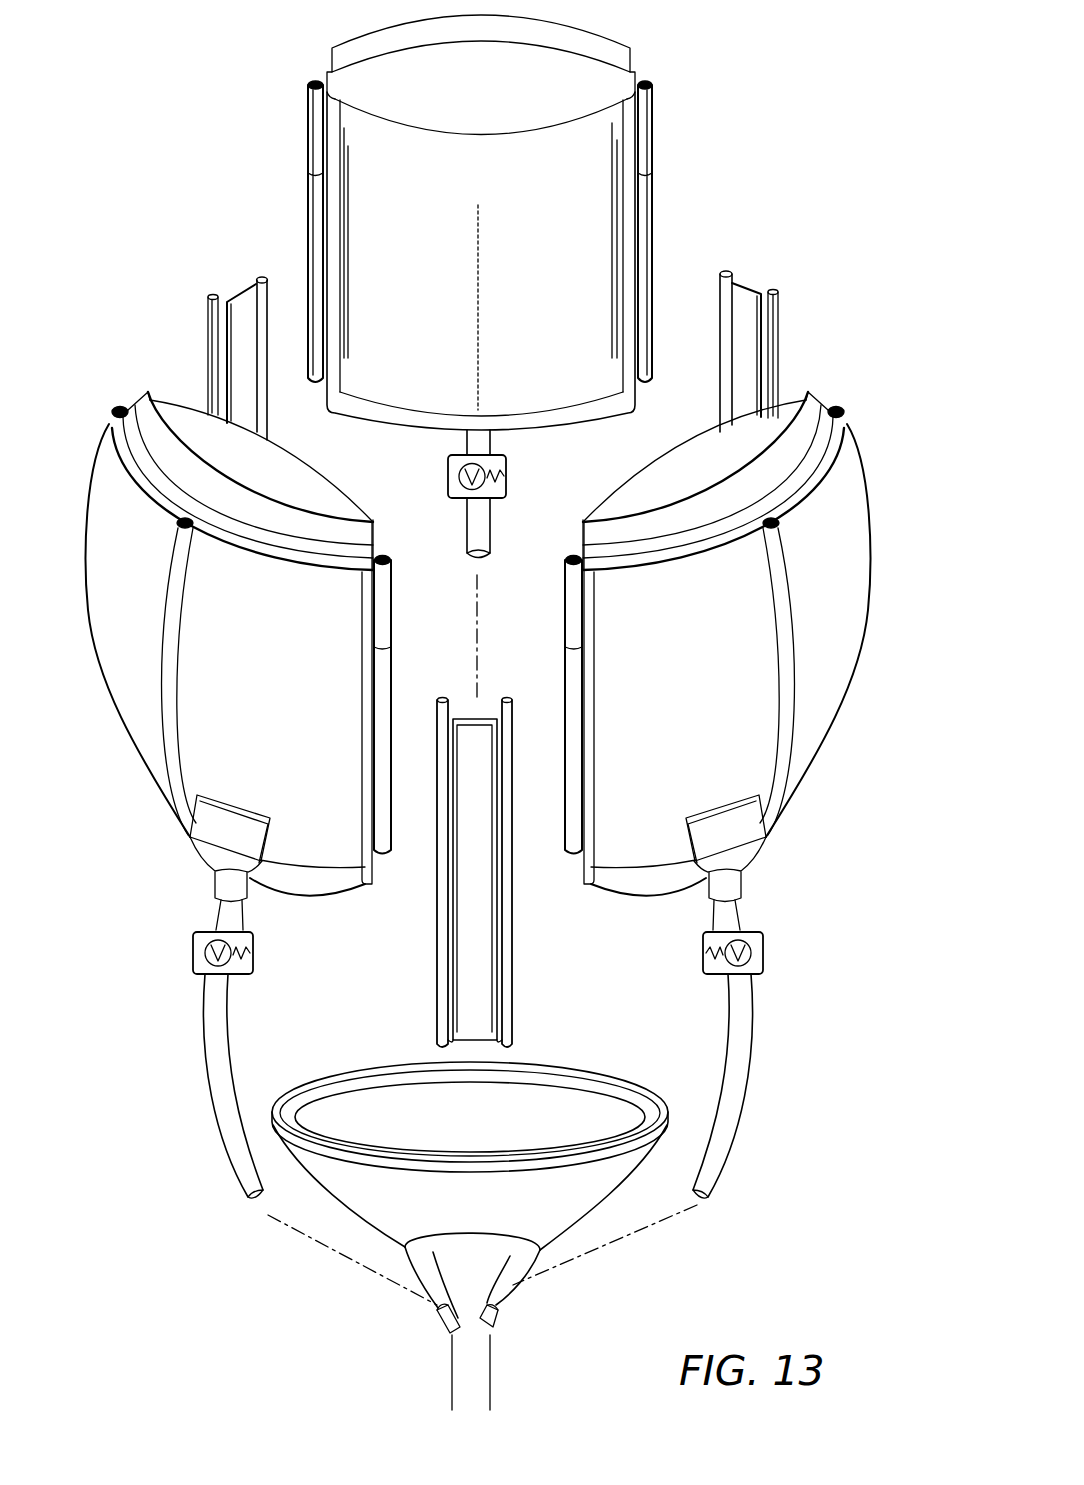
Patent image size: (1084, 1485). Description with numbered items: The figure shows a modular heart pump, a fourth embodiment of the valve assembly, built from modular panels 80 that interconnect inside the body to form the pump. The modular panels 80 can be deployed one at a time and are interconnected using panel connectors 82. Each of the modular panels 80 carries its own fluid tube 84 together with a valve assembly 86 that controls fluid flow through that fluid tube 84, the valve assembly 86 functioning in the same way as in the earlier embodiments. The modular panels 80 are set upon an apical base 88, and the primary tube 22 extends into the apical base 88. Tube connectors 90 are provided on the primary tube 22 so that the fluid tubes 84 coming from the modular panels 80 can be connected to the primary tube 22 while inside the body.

The modular panel 80 is at (580, 248).
The panel connector 82 is at (210, 377).
The fluid tube 84 is at (217, 1062).
The valve assembly 86 is at (208, 930).
The apical base 88 is at (343, 1073).
The primary tube 22 is at (468, 1350).
The tube connector 90 is at (487, 1320).